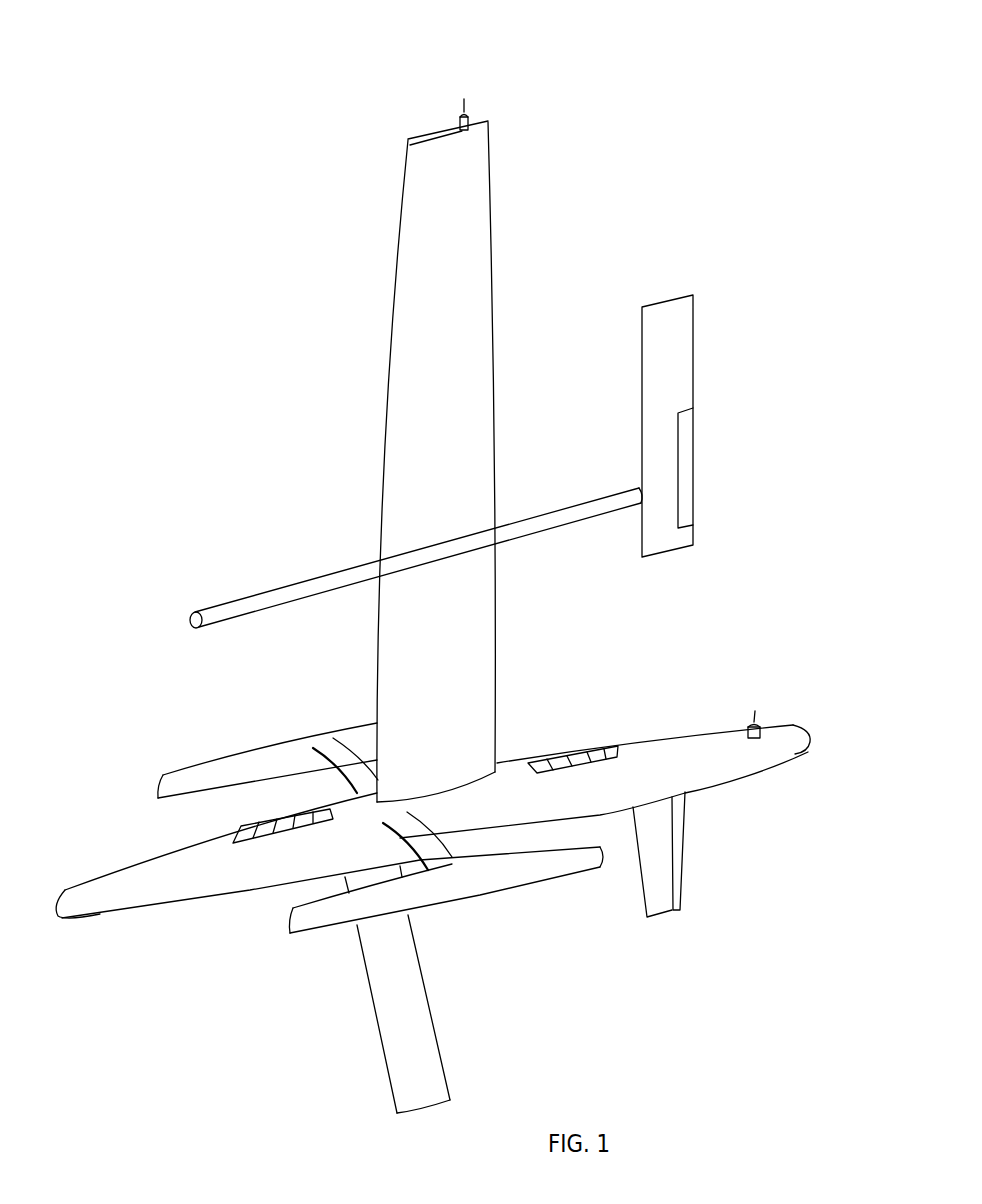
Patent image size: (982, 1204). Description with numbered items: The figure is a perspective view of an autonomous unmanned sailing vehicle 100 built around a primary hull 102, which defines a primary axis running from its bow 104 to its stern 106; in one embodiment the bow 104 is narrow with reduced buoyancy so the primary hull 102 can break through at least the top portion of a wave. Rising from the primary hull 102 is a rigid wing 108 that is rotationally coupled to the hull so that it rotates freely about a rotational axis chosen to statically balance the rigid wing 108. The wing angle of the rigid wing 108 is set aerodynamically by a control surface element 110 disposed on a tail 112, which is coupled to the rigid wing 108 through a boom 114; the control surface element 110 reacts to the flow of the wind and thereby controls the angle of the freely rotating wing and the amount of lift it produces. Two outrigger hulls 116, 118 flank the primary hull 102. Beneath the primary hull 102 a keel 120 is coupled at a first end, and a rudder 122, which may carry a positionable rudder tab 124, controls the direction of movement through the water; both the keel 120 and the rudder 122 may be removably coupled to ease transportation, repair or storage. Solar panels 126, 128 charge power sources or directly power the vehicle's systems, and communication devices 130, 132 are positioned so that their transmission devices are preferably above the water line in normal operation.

The autonomous sailing vehicle 100 is at (724, 94).
The primary hull 102 is at (283, 863).
The bow 104 is at (65, 903).
The stern 106 is at (808, 730).
The rigid wing 108 is at (455, 270).
The control surface element 110 is at (683, 488).
The tail 112 is at (670, 337).
The boom 114 is at (520, 527).
The outrigger hull 116 is at (293, 743).
The outrigger hull 118 is at (483, 885).
The keel 120 is at (422, 1087).
The rudder 122 is at (660, 905).
The rudder tab 124 is at (685, 843).
The solar panel 126 is at (247, 830).
The solar panel 128 is at (562, 760).
The communication device 130 is at (748, 722).
The communication device 132 is at (470, 117).